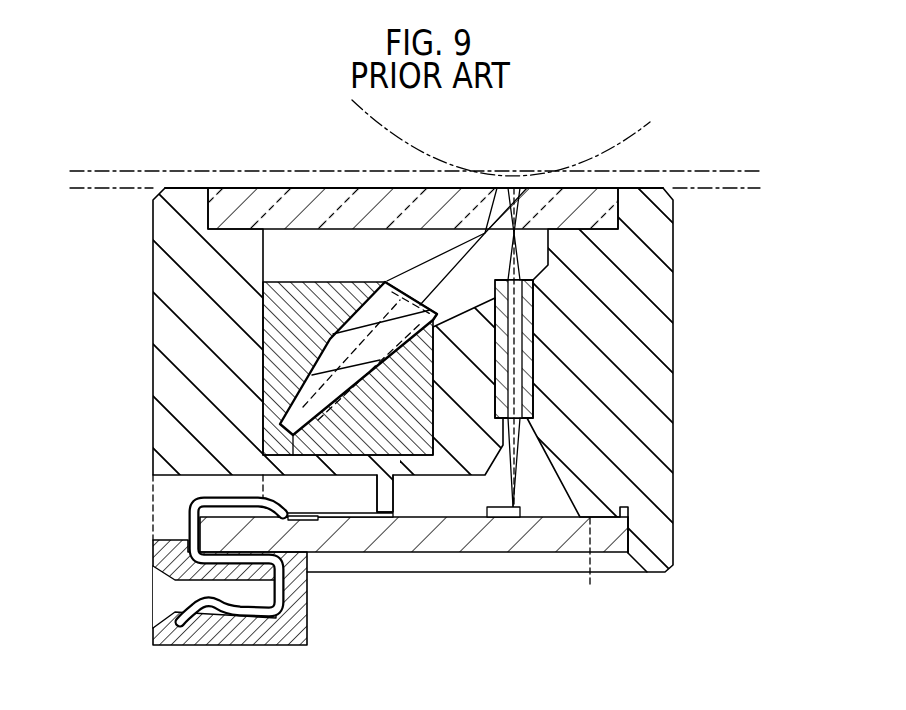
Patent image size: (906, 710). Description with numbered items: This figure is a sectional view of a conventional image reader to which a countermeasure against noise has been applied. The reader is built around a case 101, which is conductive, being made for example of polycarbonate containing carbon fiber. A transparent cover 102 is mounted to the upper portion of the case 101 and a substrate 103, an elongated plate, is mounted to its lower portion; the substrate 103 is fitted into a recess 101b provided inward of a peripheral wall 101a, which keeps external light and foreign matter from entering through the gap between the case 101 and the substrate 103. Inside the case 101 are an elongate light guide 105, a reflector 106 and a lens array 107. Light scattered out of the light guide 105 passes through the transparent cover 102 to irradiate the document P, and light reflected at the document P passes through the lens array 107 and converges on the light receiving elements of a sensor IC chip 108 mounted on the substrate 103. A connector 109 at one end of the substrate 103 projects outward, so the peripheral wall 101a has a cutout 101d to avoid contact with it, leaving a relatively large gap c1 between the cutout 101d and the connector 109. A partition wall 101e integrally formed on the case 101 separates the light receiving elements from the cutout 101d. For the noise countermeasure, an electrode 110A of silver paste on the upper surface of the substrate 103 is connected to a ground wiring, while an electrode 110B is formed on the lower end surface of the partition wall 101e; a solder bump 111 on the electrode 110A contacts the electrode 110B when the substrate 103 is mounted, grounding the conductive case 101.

The document P is at (118, 170).
The case 101 is at (160, 265).
The peripheral wall 101a is at (652, 533).
The recess 101b is at (598, 568).
The cutout 101d is at (189, 492).
The partition wall 101e is at (386, 503).
The transparent cover 102 is at (263, 206).
The substrate 103 is at (470, 537).
The light guide 105 is at (292, 368).
The reflector 106 is at (278, 311).
The lens array 107 is at (540, 344).
The sensor IC chip 108 is at (503, 514).
The connector 109 is at (153, 633).
The electrode 110A is at (310, 521).
The electrode 110B is at (344, 520).
The solder bump 111 is at (321, 520).
The gap c1 is at (205, 490).